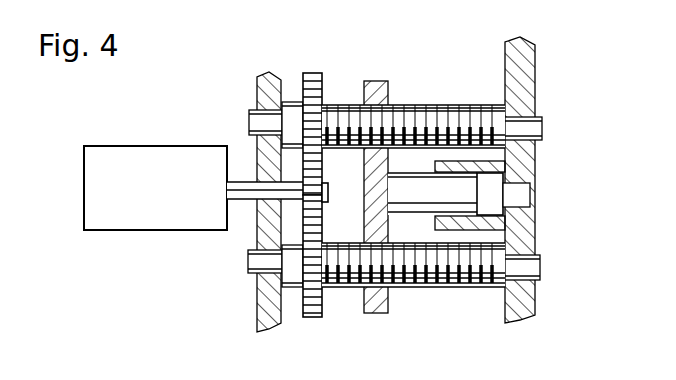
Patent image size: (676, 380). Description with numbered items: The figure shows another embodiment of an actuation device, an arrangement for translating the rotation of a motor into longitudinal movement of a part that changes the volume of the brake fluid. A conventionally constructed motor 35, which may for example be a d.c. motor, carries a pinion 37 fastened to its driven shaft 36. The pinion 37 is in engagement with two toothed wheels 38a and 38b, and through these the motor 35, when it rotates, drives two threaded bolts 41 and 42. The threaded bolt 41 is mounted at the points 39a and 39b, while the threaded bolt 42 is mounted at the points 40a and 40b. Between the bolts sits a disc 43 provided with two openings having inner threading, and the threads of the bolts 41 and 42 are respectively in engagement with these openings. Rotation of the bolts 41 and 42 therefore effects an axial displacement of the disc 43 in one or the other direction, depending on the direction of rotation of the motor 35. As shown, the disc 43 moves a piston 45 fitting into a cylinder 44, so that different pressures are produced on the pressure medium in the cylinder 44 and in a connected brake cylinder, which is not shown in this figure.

The motor 35 is at (130, 215).
The driven shaft 36 is at (247, 190).
The pinion 37 is at (325, 202).
The toothed wheel 38a is at (315, 80).
The toothed wheel 38b is at (308, 318).
The mounting point 39a is at (250, 117).
The mounting point 39b is at (518, 121).
The mounting point 40a is at (258, 292).
The mounting point 40b is at (523, 282).
The threaded bolt 41 is at (435, 118).
The threaded bolt 42 is at (440, 288).
The disc 43 is at (378, 80).
The cylinder 44 is at (490, 220).
The piston 45 is at (468, 187).